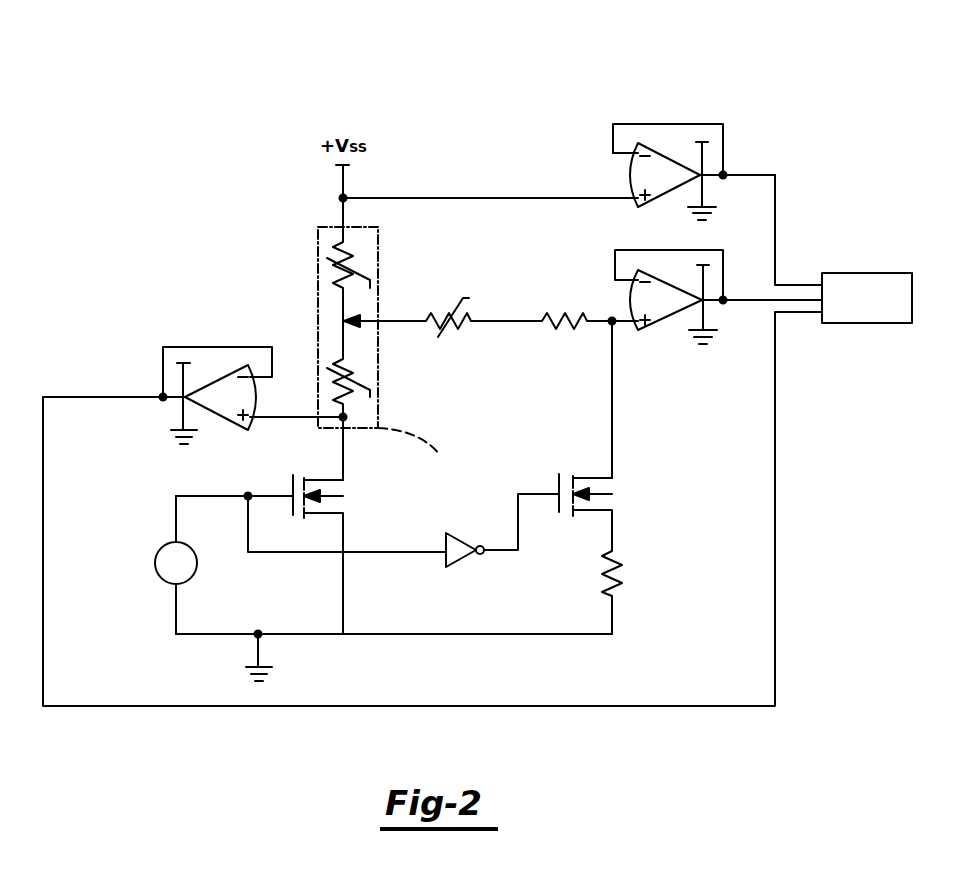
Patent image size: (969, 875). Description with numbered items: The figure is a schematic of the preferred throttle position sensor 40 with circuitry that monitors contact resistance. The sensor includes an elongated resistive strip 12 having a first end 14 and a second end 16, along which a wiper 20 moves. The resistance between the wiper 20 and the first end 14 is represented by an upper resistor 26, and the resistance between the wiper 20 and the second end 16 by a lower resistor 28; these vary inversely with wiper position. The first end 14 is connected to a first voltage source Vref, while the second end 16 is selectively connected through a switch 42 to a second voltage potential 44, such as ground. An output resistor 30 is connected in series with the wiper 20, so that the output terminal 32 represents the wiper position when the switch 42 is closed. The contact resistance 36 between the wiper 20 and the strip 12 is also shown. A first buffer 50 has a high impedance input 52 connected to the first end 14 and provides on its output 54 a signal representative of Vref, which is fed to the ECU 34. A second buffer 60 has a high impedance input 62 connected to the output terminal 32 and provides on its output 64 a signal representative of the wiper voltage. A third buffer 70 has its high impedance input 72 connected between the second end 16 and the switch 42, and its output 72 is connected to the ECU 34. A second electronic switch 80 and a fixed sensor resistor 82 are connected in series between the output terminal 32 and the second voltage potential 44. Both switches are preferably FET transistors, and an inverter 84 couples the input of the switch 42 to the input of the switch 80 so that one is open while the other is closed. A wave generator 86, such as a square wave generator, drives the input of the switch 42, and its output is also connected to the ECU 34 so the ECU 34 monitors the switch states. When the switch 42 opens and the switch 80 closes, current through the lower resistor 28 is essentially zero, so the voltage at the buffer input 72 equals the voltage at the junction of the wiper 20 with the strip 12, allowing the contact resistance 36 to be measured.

The resistive strip 12 is at (378, 400).
The first end 14 is at (378, 240).
The second end 16 is at (427, 448).
The wiper 20 is at (350, 320).
The upper resistor 26 is at (337, 268).
The lower resistor 28 is at (378, 372).
The output resistor 30 is at (565, 332).
The output terminal 32 is at (610, 320).
The ECU 34 is at (862, 273).
The contact resistance 36 is at (450, 330).
The throttle position sensor 40 is at (668, 100).
The switch 42 is at (335, 487).
The second voltage potential 44 is at (250, 670).
The first buffer 50 is at (660, 198).
The high impedance input 52 is at (545, 197).
The buffer output 54 is at (776, 217).
The second buffer 60 is at (662, 326).
The high impedance input 62 is at (620, 334).
The buffer output 64 is at (745, 302).
The third buffer 70 is at (215, 408).
The buffer input and output 72 is at (103, 397).
The second electronic switch 80 is at (600, 483).
The sensor resistor 82 is at (628, 570).
The inverter 84 is at (465, 562).
The wave generator 86 is at (155, 563).